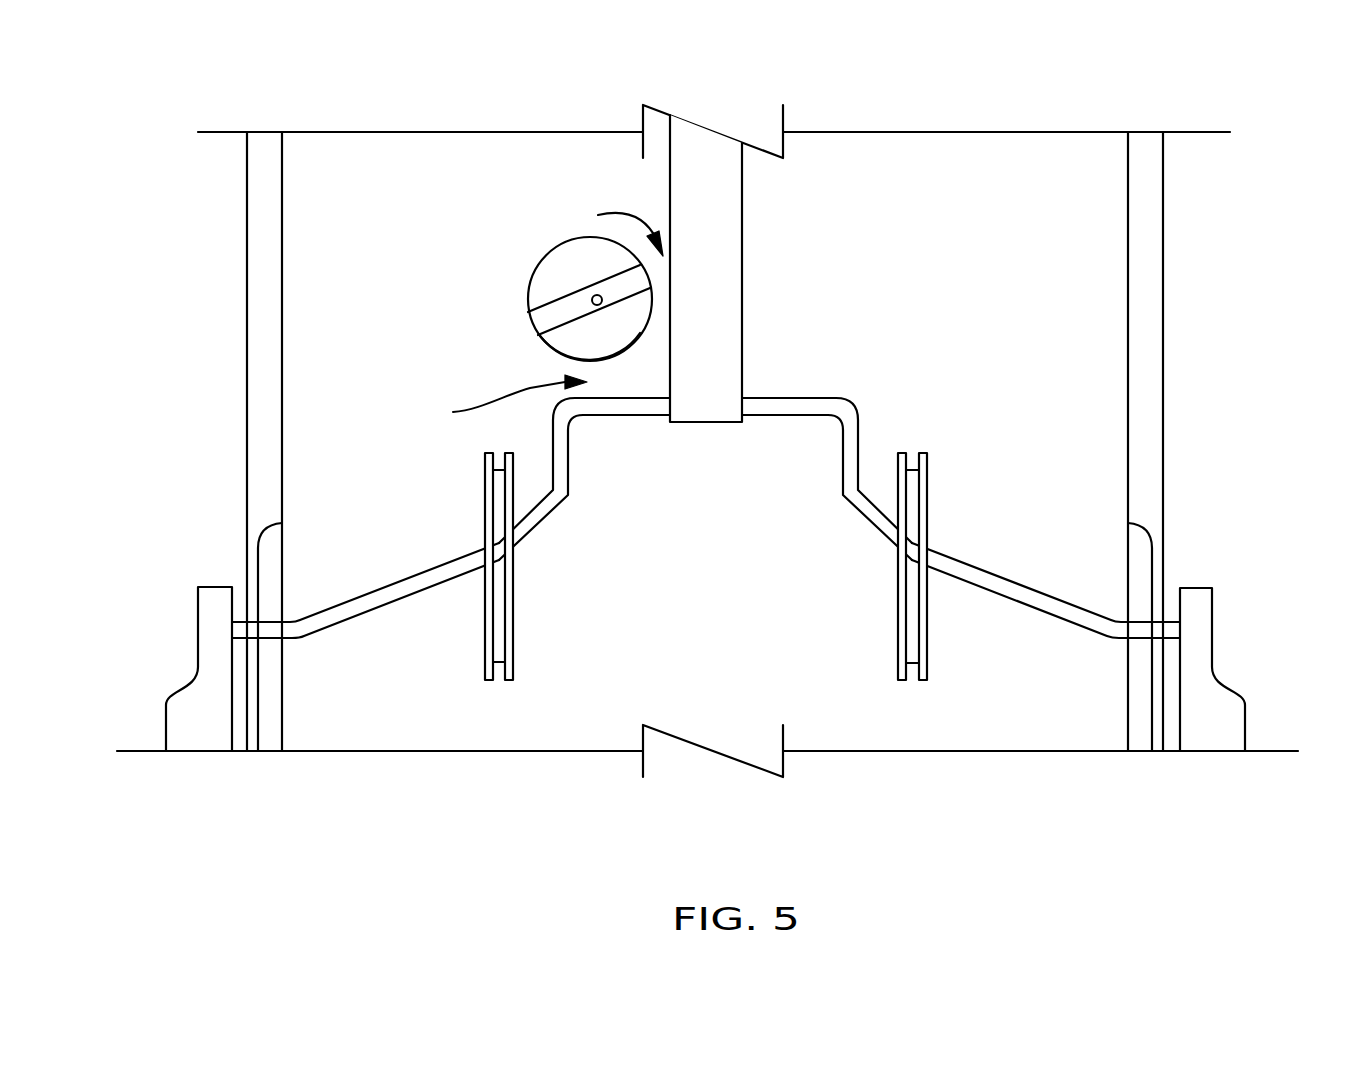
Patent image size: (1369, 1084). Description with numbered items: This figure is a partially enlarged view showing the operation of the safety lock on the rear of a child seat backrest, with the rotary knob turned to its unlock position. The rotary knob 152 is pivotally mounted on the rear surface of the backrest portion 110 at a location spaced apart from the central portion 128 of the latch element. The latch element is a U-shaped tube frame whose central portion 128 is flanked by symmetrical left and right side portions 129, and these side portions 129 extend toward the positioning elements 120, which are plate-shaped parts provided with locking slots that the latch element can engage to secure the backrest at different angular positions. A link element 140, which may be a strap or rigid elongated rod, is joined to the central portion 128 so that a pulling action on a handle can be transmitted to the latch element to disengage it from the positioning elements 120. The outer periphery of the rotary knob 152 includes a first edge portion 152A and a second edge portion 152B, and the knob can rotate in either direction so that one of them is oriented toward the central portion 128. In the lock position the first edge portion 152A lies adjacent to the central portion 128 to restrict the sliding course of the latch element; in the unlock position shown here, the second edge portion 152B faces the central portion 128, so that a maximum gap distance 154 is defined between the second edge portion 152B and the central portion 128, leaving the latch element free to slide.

The backrest portion 110 is at (1128, 260).
The positioning element 120 is at (205, 615).
The central portion 128 is at (790, 407).
The side portions 129 is at (312, 618).
The link element 140 is at (733, 272).
The rotary knob 152 is at (538, 307).
The first edge portion 152A is at (527, 326).
The second edge portion 152B is at (614, 357).
The maximum gap distance 154 is at (488, 403).